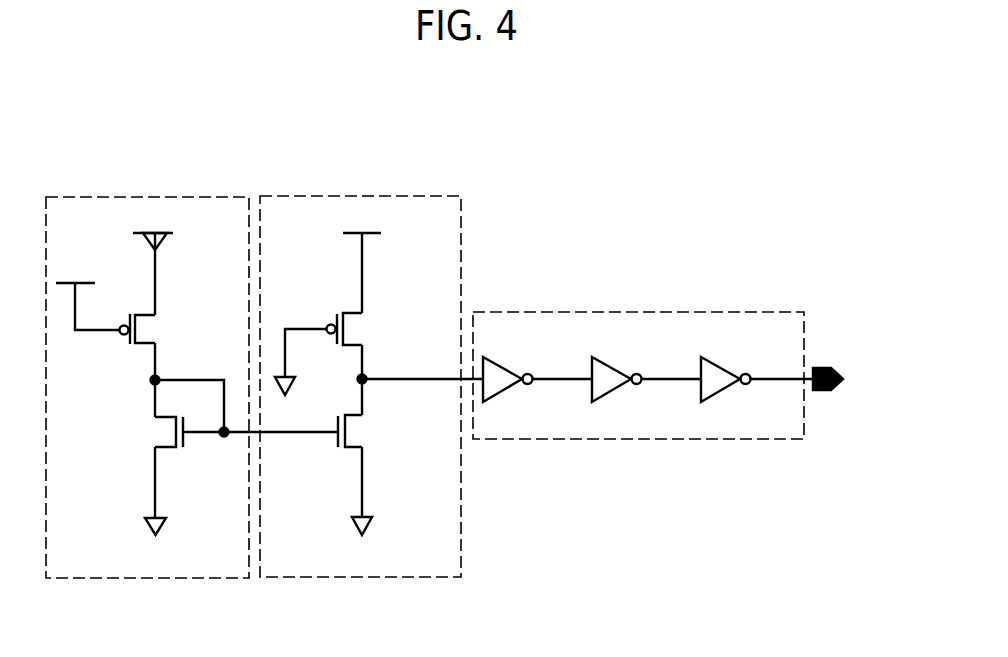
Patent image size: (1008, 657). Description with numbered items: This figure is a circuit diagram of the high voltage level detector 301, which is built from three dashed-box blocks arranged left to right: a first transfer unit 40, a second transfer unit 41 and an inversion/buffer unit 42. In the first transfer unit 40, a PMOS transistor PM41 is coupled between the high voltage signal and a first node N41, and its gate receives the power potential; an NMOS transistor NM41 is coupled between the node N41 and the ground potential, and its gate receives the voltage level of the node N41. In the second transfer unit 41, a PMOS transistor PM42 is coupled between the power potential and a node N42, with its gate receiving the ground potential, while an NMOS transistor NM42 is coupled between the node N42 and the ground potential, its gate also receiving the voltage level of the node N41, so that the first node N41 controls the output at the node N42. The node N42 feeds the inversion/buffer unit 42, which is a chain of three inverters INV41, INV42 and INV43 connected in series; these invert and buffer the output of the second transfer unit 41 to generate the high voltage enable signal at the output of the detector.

The high voltage level detector 301 is at (731, 173).
The first transfer unit 40 is at (206, 197).
The second transfer unit 41 is at (418, 196).
The inversion/buffer unit 42 is at (752, 312).
The PMOS transistor PM41 is at (164, 329).
The PMOS transistor PM42 is at (372, 329).
The NMOS transistor NM41 is at (140, 432).
The NMOS transistor NM42 is at (380, 431).
The first node N41 is at (223, 456).
The node N42 is at (406, 364).
The inverter INV41 is at (505, 369).
The inverter INV42 is at (614, 369).
The inverter INV43 is at (723, 369).